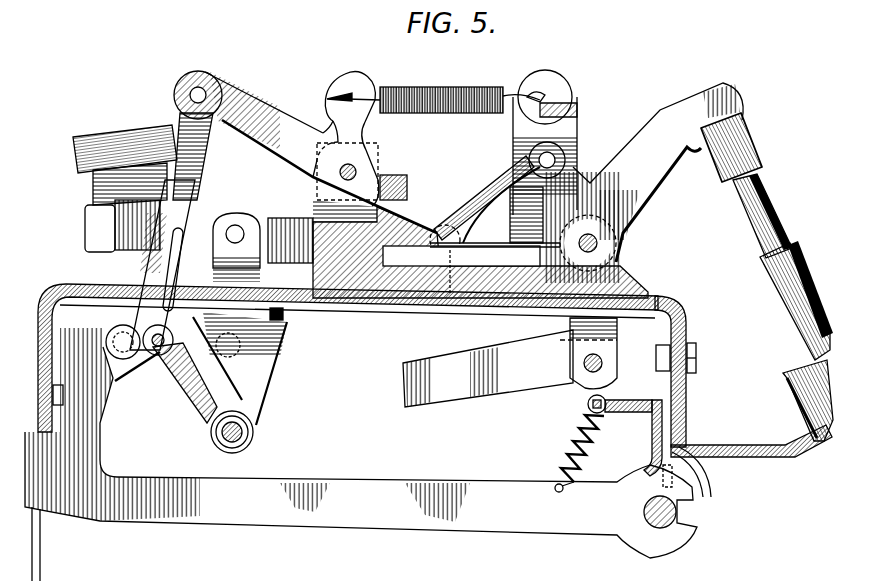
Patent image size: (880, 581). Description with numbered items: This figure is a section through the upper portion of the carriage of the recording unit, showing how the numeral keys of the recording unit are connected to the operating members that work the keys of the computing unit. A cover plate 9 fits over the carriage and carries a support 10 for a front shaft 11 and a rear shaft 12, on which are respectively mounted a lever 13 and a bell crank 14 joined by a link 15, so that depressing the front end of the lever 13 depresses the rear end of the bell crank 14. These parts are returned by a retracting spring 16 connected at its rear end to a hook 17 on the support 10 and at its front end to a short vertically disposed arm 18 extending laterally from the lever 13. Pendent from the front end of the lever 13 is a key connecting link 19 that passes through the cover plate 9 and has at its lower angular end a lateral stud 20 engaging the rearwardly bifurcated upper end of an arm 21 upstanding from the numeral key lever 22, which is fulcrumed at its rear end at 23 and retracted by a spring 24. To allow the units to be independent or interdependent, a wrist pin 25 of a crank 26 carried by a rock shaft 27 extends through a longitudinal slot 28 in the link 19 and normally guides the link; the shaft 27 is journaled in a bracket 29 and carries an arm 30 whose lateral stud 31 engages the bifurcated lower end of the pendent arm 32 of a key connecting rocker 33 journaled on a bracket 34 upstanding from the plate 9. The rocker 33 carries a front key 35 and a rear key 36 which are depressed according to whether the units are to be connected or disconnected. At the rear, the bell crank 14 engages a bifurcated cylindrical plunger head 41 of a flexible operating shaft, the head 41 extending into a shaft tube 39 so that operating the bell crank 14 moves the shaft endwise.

The cover plate 9 is at (662, 312).
The support 10 is at (628, 275).
The front shaft 11 is at (358, 165).
The rear shaft 12 is at (600, 244).
The lever 13 is at (262, 98).
The bell crank 14 is at (640, 133).
The link 15 is at (478, 182).
The retracting spring 16 is at (458, 84).
The hook 17 is at (542, 82).
The arm 18 is at (347, 76).
The key connecting link 19 is at (150, 272).
The lateral stud 20 is at (120, 340).
The arm 21 is at (108, 336).
The numeral key lever 22 is at (372, 474).
The fulcrum 23 is at (644, 512).
The spring 24 is at (567, 451).
The wrist pin 25 is at (178, 368).
The crank 26 is at (190, 397).
The rock shaft 27 is at (254, 433).
The longitudinal slot 28 is at (182, 236).
The bracket 29 is at (270, 352).
The arm 30 is at (265, 382).
The lateral stud 31 is at (235, 356).
The pendent arm 32 is at (285, 322).
The key connecting rocker 33 is at (88, 209).
The bracket 34 is at (247, 214).
The key 35 is at (143, 136).
The key 36 is at (408, 178).
The shaft tube 39 is at (790, 312).
The plunger head 41 is at (772, 205).